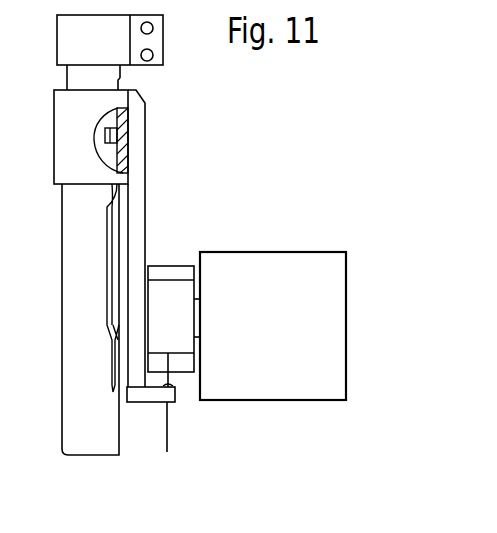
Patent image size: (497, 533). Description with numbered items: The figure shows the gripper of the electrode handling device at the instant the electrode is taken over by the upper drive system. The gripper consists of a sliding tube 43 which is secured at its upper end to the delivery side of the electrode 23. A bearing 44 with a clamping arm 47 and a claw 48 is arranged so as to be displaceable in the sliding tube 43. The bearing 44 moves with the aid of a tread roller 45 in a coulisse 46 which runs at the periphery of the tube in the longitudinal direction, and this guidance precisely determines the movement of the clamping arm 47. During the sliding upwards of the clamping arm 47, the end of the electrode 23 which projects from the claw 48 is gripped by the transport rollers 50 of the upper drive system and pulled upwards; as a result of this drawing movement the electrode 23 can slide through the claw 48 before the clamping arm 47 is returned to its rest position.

The electrode 23 is at (169, 431).
The sliding tube 43 is at (75, 352).
The bearing 44 is at (70, 143).
The tread roller 45 is at (127, 138).
The coulisse 46 is at (107, 240).
The clamping arm 47 is at (137, 176).
The claw 48 is at (151, 394).
The transport rollers 50 is at (183, 347).